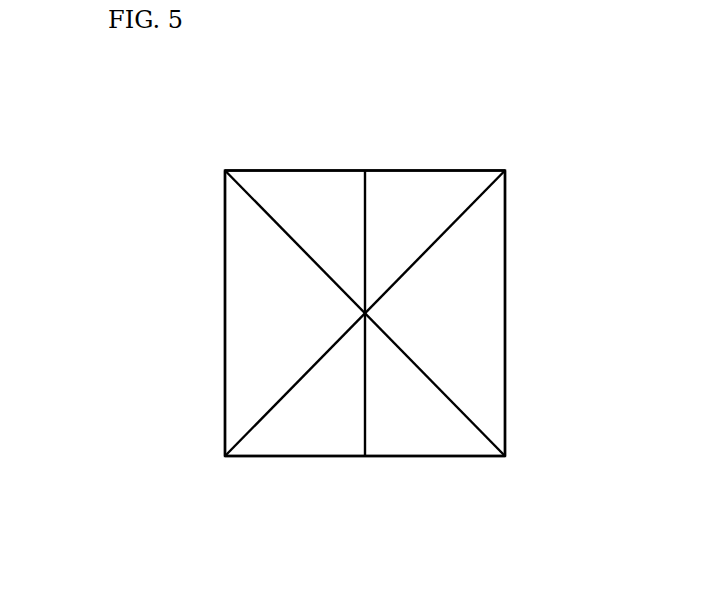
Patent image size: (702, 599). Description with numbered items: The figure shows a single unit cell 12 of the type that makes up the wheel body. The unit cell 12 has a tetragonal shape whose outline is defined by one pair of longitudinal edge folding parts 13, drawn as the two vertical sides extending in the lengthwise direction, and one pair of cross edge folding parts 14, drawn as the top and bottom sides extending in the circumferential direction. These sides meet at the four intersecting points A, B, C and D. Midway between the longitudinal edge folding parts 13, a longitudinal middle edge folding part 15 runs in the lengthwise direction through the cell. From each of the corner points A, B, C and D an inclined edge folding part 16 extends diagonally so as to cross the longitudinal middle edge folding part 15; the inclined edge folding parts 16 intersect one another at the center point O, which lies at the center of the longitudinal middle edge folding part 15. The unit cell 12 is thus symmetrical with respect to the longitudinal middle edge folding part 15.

The unit cell 12 is at (186, 140).
The longitudinal edge folding part 13 is at (225, 313).
The cross edge folding part 14 is at (467, 170).
The longitudinal middle edge folding part 15 is at (365, 223).
The inclined edge folding part 16 is at (265, 213).